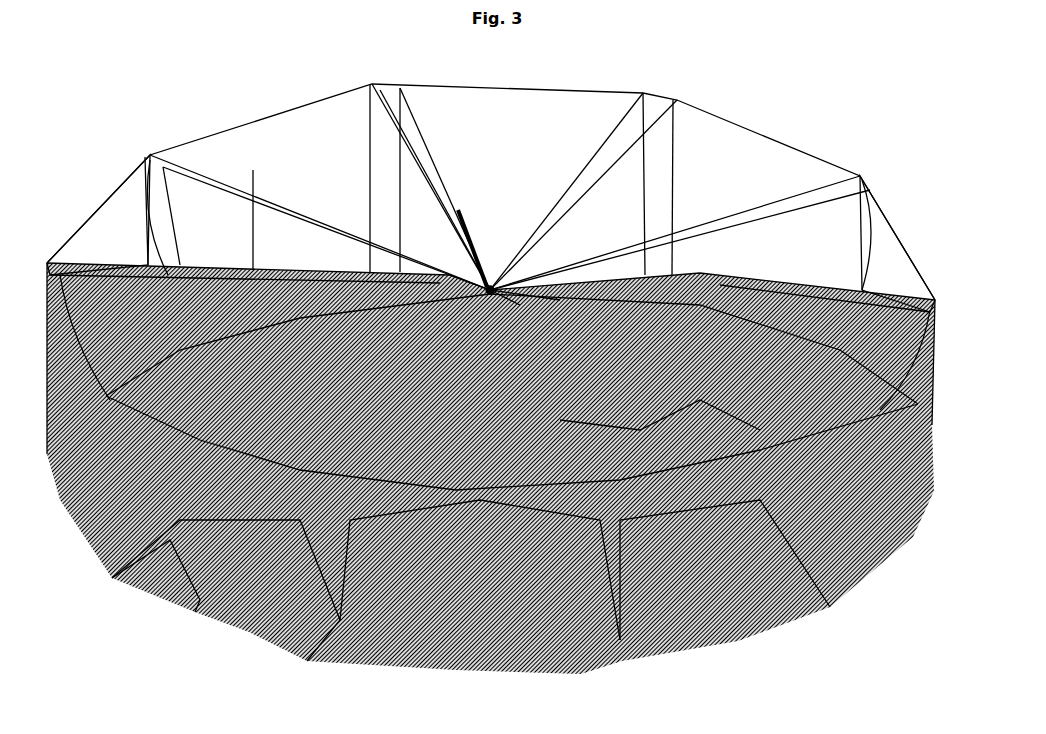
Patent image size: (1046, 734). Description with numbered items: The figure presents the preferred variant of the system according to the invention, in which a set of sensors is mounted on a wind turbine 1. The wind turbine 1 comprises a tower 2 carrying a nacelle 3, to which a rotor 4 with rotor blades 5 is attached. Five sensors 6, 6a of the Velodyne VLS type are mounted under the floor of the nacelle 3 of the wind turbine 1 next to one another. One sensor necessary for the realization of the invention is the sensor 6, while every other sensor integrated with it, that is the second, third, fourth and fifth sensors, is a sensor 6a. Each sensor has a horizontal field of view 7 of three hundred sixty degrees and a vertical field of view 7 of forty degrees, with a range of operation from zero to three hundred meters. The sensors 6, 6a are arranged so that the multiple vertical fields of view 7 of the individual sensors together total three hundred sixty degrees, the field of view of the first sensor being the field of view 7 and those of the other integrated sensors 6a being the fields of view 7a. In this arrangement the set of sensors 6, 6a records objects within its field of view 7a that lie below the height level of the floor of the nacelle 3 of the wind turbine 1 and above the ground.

The wind turbine 1 is at (491, 269).
The tower 2 is at (491, 468).
The nacelle 3 is at (516, 275).
The rotor 4 is at (418, 190).
The rotor blades 5 is at (493, 248).
The sensor 6 is at (536, 289).
The sensor 6a is at (505, 297).
The field of view of sensor 7 is at (491, 280).
The field of view of sensor 7a is at (508, 358).